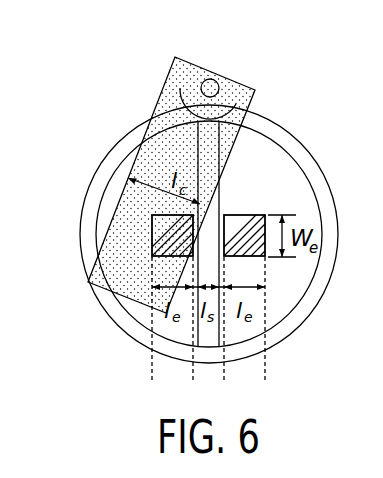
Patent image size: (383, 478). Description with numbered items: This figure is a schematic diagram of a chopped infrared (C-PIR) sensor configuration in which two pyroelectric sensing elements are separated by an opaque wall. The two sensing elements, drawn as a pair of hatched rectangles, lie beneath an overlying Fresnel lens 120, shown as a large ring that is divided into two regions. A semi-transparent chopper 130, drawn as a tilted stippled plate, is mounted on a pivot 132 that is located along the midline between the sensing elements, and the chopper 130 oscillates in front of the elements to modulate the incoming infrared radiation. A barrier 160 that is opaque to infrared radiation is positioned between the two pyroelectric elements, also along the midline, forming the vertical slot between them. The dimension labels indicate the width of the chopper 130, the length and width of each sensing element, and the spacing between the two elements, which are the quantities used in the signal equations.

The Fresnel lens 120 is at (102, 184).
The semi-transparent chopper 130 is at (253, 105).
The pivot 132 is at (212, 79).
The barrier 160 is at (221, 210).